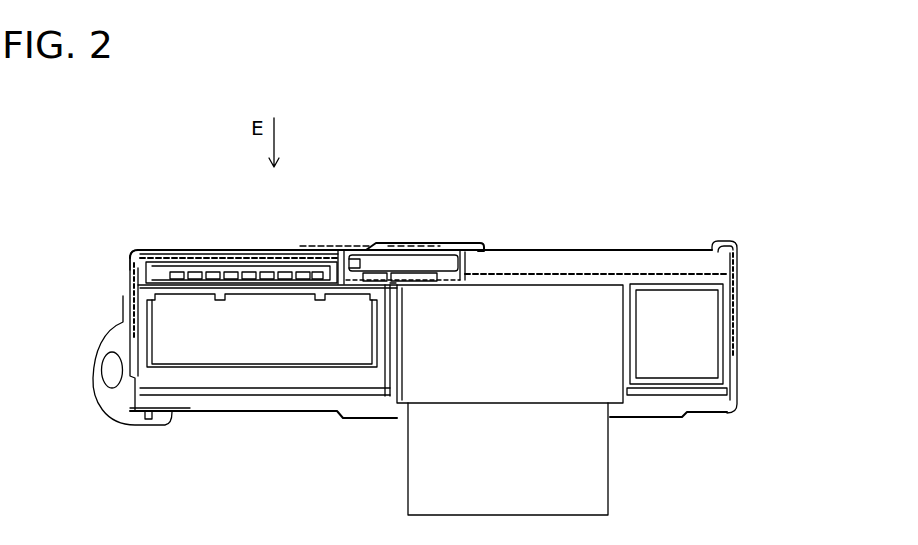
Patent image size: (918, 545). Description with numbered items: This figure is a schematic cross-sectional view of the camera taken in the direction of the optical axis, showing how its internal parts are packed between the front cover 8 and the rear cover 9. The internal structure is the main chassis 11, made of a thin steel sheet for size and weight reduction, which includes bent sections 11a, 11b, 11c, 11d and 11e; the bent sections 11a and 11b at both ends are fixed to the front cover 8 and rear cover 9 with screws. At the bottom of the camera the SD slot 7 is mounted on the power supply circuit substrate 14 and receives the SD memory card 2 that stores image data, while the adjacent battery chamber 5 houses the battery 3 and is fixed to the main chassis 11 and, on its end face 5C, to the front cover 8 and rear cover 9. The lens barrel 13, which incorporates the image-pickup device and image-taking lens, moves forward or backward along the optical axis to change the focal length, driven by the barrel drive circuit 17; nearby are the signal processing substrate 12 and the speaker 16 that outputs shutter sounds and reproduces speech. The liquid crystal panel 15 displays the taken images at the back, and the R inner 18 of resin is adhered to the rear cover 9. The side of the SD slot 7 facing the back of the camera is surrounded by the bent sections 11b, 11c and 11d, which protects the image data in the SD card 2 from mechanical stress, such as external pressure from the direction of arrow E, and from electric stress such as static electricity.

The SD memory card 2 is at (300, 268).
The battery 3 is at (230, 348).
The battery chamber 5 is at (385, 348).
The end face 5C is at (122, 344).
The SD slot 7 is at (341, 262).
The front cover 8 is at (289, 413).
The rear cover 9 is at (468, 243).
The main chassis 11 is at (570, 272).
The bent section 11a is at (733, 327).
The bent section 11b is at (124, 280).
The bent section 11c is at (224, 258).
The bent section 11d is at (356, 262).
The board portion 11e is at (391, 282).
The signal processing substrate 12 is at (694, 400).
The lens barrel 13 is at (598, 476).
The power supply circuit substrate 14 is at (134, 258).
The liquid crystal panel 15 is at (662, 251).
The speaker 16 is at (437, 261).
The barrel drive circuit 17 is at (707, 368).
The R inner 18 is at (171, 252).